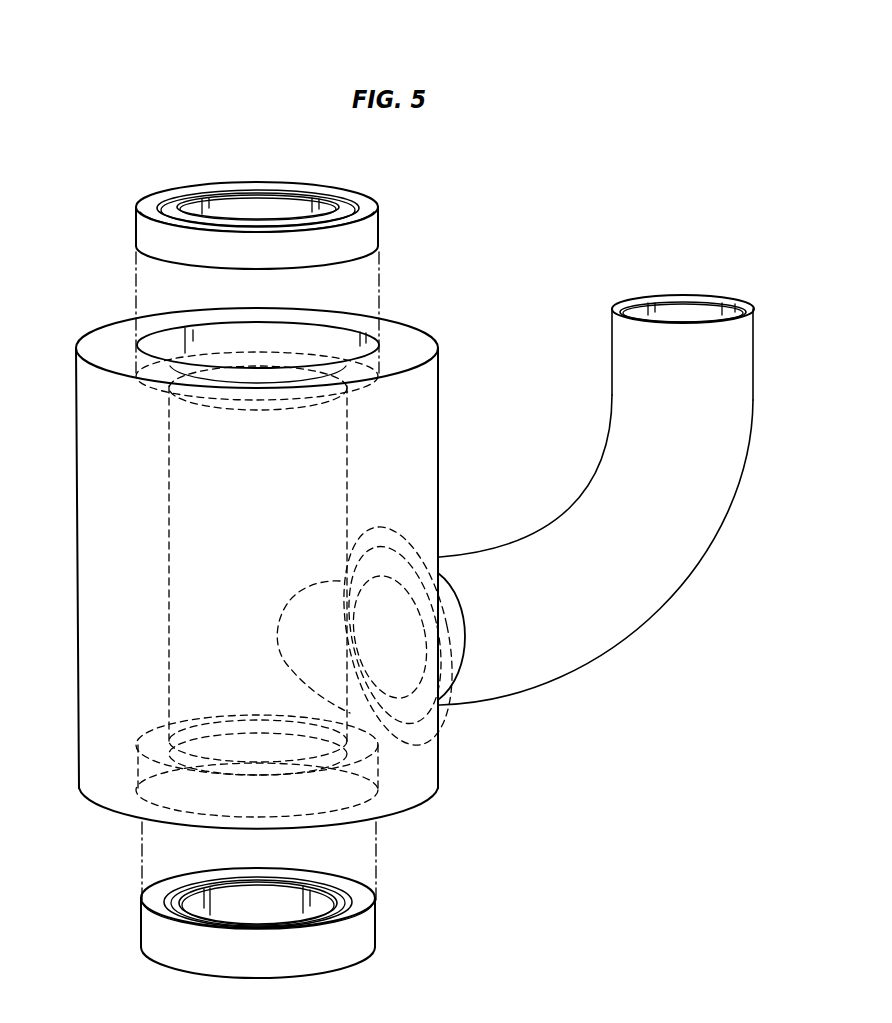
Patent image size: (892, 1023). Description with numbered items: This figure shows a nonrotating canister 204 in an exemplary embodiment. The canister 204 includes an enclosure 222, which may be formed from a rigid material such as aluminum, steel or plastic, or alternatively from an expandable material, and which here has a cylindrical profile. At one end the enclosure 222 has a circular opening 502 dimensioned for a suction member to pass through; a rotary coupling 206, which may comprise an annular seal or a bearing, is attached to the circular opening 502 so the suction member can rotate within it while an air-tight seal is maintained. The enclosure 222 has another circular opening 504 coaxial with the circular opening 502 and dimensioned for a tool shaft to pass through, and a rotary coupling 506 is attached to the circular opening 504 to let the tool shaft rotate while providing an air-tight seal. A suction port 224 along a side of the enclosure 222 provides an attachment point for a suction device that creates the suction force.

The canister 204 is at (72, 274).
The rotary coupling 206 is at (360, 939).
The enclosure 222 is at (438, 755).
The suction port 224 is at (453, 663).
The circular opening 502 is at (340, 788).
The circular opening 504 is at (323, 343).
The rotary coupling 506 is at (368, 233).